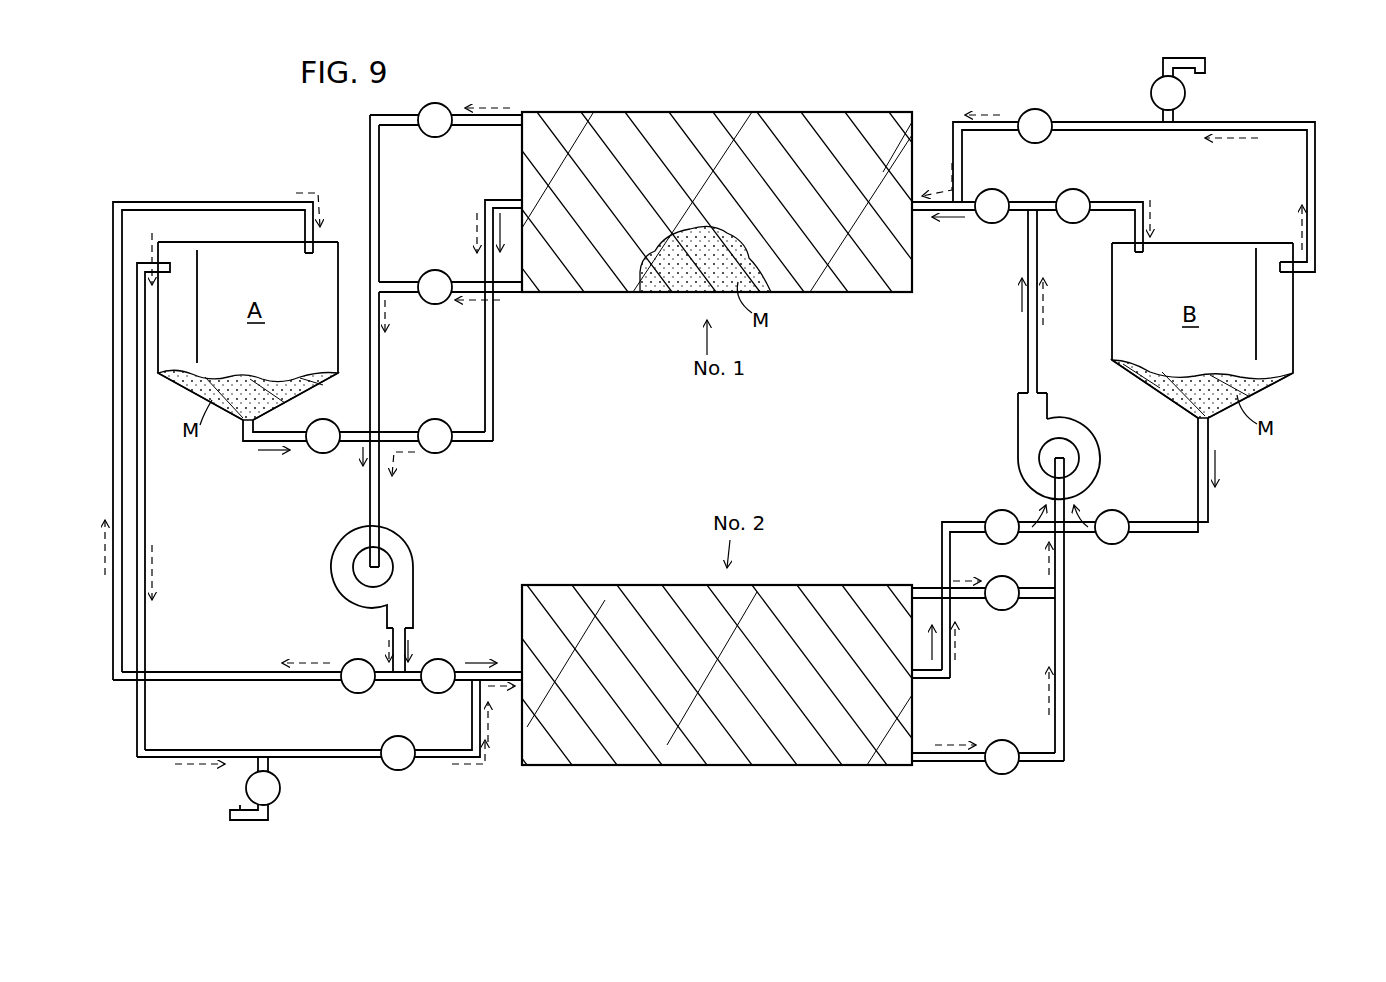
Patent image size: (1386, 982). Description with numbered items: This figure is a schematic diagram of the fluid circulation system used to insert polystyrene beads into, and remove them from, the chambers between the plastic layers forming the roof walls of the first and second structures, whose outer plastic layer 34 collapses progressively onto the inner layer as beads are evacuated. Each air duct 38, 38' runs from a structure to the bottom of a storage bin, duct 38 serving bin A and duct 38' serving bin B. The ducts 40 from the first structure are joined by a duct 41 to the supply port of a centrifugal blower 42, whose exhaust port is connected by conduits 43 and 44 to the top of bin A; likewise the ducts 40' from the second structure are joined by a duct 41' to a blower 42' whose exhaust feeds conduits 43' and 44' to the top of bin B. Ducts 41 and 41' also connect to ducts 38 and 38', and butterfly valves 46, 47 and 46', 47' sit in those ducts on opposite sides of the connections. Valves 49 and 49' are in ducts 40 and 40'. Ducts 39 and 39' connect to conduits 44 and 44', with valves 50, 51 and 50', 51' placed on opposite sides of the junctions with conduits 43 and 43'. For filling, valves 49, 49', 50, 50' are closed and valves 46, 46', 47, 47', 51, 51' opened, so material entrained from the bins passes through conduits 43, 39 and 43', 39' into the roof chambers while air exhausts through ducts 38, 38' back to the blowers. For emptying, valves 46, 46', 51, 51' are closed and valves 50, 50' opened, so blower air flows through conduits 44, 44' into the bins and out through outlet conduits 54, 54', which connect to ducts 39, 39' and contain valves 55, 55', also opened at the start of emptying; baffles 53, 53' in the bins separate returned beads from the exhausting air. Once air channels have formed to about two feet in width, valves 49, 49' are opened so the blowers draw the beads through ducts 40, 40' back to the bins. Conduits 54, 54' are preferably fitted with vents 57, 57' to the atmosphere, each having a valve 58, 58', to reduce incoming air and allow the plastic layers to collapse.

The outer plastic layer 34 is at (735, 127).
The air duct 38 is at (496, 304).
The duct 39 is at (490, 681).
The ducts 40 is at (464, 200).
The duct 41 is at (395, 341).
The centrifugal blower 42 is at (398, 577).
The conduit 43 is at (372, 642).
The conduit 44 is at (317, 436).
The butterfly valve 46 is at (368, 462).
The butterfly valve 47 is at (450, 462).
The valve 49 is at (429, 203).
The valve 50 is at (350, 695).
The valve 51 is at (437, 695).
The baffle 53 is at (218, 306).
The conduit 54 is at (151, 495).
The valve 55 is at (311, 742).
The vent 57 is at (228, 804).
The valve 58 is at (289, 783).
The air duct 38' is at (936, 673).
The duct 39' is at (1027, 234).
The ducts 40' is at (976, 676).
The duct 41' is at (1087, 609).
The blower 42' is at (1026, 460).
The conduit 43' is at (1005, 301).
The conduit 44' is at (1157, 203).
The butterfly valve 46' is at (1078, 548).
The butterfly valve 47' is at (983, 506).
The valve 49' is at (1022, 698).
The valve 50' is at (1090, 191).
The valve 51' is at (1004, 191).
The baffle 53' is at (1230, 304).
The conduit 54' is at (1118, 193).
The valve 55' is at (1038, 104).
The vent 57' is at (1214, 68).
The valve 58' is at (1195, 99).